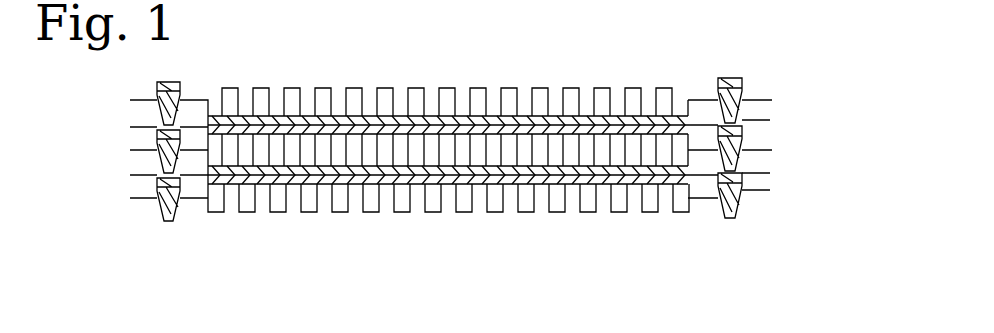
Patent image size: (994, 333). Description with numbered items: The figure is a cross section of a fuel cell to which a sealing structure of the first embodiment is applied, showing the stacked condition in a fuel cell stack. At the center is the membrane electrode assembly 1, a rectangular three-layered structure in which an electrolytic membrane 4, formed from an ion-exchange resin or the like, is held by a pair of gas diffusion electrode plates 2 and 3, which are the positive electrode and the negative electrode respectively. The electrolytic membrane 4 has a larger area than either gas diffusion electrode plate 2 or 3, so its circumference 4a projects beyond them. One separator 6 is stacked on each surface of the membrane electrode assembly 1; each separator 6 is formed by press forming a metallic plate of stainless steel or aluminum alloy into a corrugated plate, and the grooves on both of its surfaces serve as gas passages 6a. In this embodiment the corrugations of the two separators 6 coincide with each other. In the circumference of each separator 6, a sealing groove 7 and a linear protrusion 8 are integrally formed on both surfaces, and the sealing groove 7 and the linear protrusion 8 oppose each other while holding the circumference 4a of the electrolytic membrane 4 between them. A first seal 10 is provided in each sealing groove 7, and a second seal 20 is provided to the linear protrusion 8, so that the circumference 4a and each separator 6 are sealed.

The membrane electrode assembly 1 is at (420, 116).
The gas diffusion electrode plate 2 is at (495, 130).
The gas diffusion electrode plate 3 is at (560, 117).
The electrolytic membrane 4 is at (308, 90).
The circumference of the electrolytic membrane 4a is at (700, 106).
The separator 6 is at (235, 88).
The gas passages 6a is at (280, 118).
The sealing groove 7 is at (742, 92).
The linear protrusion 8 is at (740, 80).
The first seal 10 is at (745, 112).
The second seal 20 is at (725, 79).